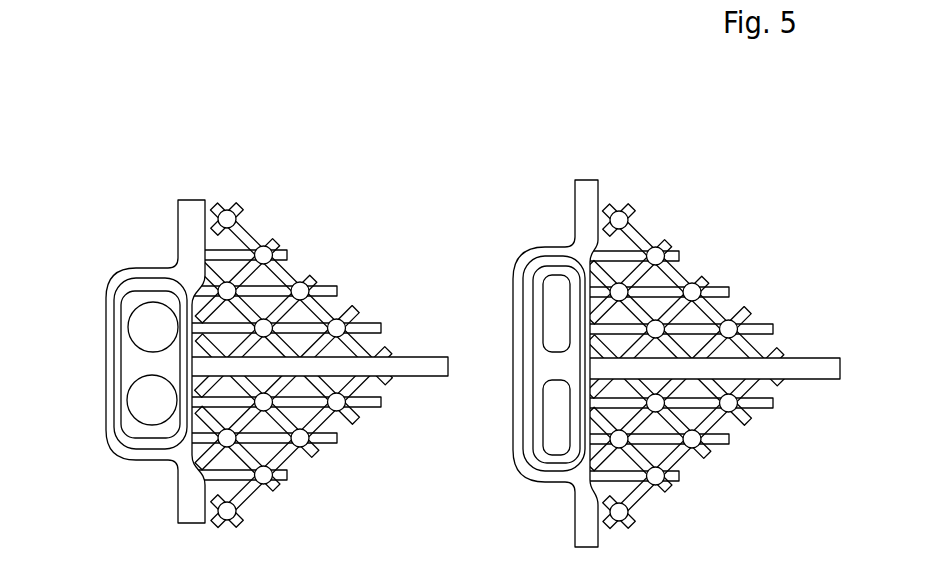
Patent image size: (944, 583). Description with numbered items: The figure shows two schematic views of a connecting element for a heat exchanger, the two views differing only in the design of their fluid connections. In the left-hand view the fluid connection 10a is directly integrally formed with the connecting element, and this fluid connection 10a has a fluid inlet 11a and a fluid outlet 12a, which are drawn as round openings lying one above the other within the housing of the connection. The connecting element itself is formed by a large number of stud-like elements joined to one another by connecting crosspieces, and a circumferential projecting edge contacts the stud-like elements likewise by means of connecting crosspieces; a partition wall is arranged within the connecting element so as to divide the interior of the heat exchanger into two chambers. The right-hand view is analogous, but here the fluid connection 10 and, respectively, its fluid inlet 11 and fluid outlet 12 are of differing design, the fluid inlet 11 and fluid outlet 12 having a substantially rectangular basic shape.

The fluid connection 10 is at (542, 303).
The fluid connection 10a is at (127, 362).
The fluid inlet 11 is at (557, 320).
The fluid inlet 11a is at (143, 323).
The fluid outlet 12 is at (553, 412).
The fluid outlet 12a is at (142, 403).